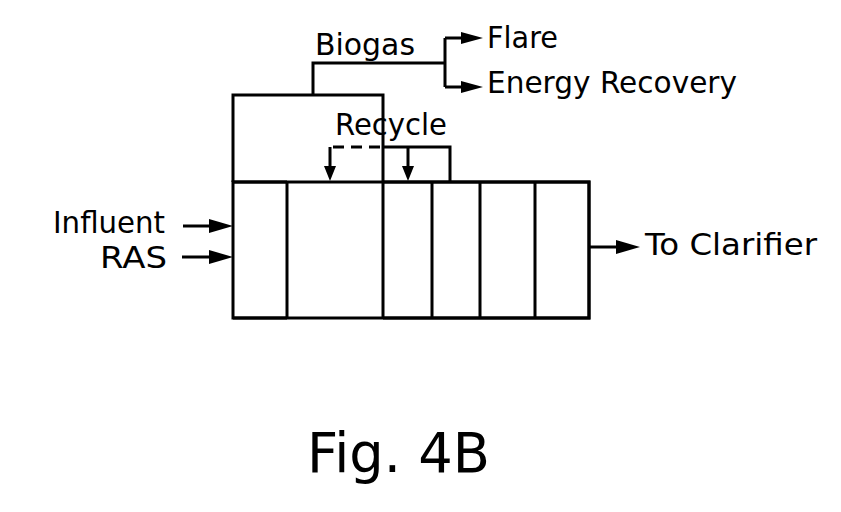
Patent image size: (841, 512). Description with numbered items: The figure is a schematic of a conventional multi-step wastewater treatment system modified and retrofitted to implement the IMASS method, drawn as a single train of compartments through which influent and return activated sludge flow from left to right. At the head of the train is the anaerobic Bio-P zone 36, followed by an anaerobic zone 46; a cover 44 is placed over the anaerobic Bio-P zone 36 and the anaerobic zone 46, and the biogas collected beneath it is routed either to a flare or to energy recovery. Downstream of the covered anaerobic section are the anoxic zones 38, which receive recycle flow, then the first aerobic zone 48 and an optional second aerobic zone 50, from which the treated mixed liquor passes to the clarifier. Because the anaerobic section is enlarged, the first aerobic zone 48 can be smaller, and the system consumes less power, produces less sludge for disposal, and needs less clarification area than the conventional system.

The anaerobic Bio-P zone 36 is at (262, 207).
The cover 44 is at (268, 150).
The anaerobic zone 46 is at (322, 293).
The anoxic zones 38 is at (413, 302).
The first aerobic zone 48 is at (453, 297).
The second aerobic zone 50 is at (565, 293).